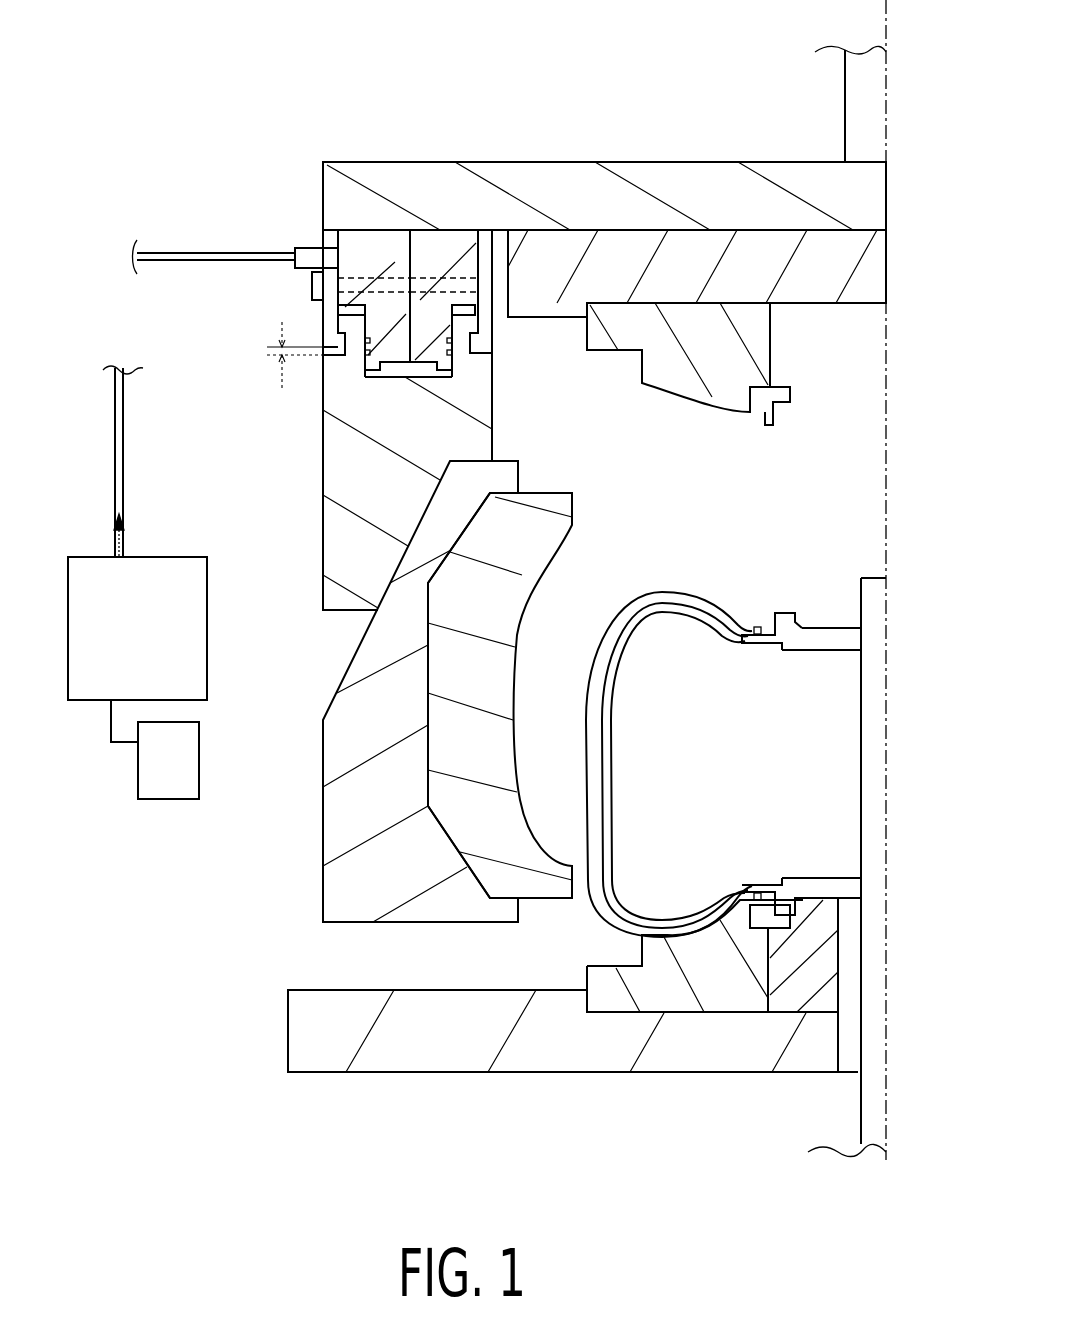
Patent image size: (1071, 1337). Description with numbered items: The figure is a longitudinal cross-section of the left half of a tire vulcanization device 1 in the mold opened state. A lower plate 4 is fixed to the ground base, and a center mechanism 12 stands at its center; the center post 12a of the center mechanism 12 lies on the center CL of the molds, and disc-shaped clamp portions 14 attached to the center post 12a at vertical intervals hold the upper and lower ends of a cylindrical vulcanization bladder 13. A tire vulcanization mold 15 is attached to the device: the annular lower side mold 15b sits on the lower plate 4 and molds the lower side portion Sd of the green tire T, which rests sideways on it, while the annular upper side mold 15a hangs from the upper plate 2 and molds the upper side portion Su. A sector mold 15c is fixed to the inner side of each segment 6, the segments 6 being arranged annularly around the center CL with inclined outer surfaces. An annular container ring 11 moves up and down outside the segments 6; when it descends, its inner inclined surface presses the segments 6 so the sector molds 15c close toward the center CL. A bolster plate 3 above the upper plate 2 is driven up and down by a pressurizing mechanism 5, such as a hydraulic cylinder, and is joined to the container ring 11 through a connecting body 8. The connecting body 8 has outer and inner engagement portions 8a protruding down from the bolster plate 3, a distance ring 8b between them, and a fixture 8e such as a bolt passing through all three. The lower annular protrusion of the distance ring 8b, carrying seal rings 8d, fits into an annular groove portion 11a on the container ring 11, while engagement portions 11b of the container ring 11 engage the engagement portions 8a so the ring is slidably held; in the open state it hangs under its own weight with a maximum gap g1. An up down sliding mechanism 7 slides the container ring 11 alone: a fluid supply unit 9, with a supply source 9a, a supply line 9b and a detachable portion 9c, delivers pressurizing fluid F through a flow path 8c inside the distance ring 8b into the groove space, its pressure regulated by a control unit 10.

The tire vulcanization device 1 is at (546, 153).
The upper plate 2 is at (820, 300).
The bolster plate 3 is at (673, 178).
The lower plate 4 is at (456, 1060).
The pressurizing mechanism 5 is at (845, 112).
The segment 6 is at (337, 772).
The up down sliding mechanism 7 is at (117, 240).
The connecting body 8 is at (367, 274).
The engagement portion 8a is at (340, 345).
The distance ring 8b is at (438, 238).
The flow path 8c is at (375, 250).
The seal ring 8d is at (368, 355).
The fixture 8e is at (312, 285).
The fluid supply unit 9 is at (189, 517).
The supply source 9a is at (137, 591).
The supply line 9b is at (196, 248).
The detachable portion 9c is at (296, 248).
The control unit 10 is at (165, 799).
The container ring 11 is at (401, 399).
The annular groove portion 11a is at (418, 378).
The engagement portion 11b is at (345, 330).
The center mechanism 12 is at (801, 836).
The center post 12a is at (870, 752).
The vulcanization bladder 13 is at (610, 840).
The clamp portion 14 is at (828, 648).
The tire vulcanization mold 15 is at (633, 714).
The upper side mold 15a is at (690, 375).
The lower side mold 15b is at (722, 1000).
The sector mold 15c is at (530, 690).
The green tire T is at (592, 738).
The upper side portion Su is at (658, 598).
The lower side portion Sd is at (624, 922).
The pressurizing fluid F is at (118, 567).
The maximum gap g1 is at (286, 356).
The center CL is at (886, 603).